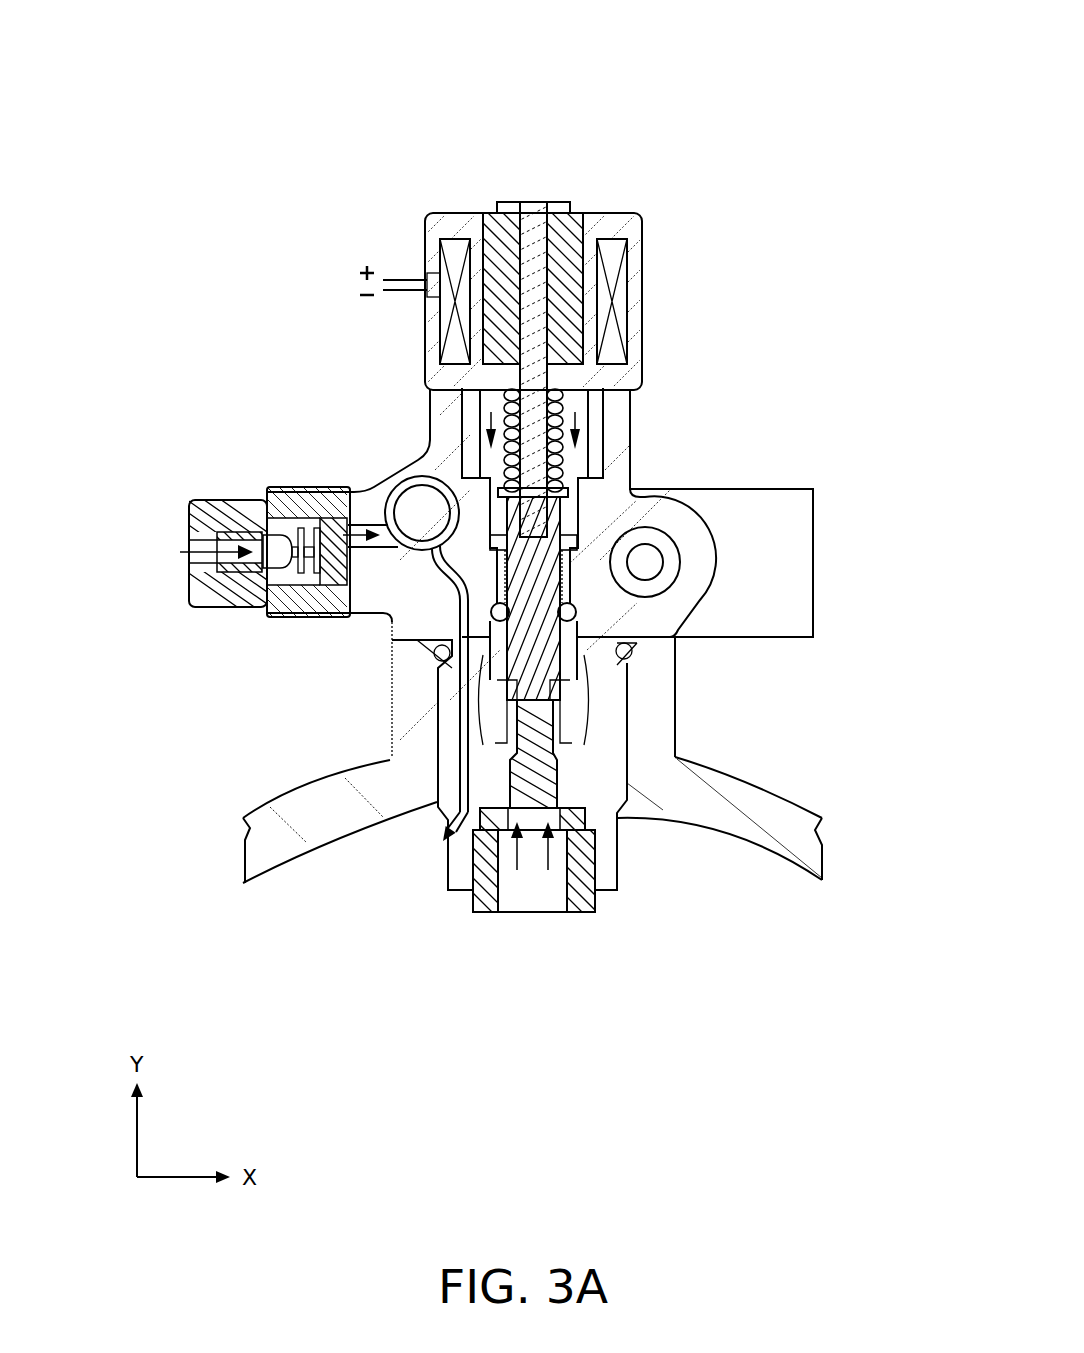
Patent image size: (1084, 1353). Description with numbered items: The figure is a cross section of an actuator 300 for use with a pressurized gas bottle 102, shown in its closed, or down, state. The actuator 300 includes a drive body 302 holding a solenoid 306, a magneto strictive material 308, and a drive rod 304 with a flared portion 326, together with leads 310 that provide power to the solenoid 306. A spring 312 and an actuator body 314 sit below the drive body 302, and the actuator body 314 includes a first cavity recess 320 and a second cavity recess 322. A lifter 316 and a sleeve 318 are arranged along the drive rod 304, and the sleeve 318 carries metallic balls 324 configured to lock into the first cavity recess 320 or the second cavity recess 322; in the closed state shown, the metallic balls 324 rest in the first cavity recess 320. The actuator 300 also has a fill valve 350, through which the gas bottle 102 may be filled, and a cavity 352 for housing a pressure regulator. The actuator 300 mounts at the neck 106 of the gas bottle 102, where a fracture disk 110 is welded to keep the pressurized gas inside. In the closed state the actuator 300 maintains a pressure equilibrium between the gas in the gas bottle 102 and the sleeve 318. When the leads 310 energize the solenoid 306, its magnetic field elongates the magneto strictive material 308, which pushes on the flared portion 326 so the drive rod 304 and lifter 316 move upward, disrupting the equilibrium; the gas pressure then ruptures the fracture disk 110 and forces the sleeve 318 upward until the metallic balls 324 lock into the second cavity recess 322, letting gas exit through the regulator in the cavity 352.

The actuator 300 is at (247, 102).
The drive body 302 is at (433, 230).
The drive rod 304 is at (538, 243).
The solenoid 306 is at (457, 310).
The magneto strictive material 308 is at (563, 332).
The leads 310 is at (318, 281).
The spring 312 is at (548, 455).
The actuator body 314 is at (405, 462).
The lifter 316 is at (515, 670).
The sleeve 318 is at (515, 752).
The first cavity recess 320 is at (492, 620).
The second cavity recess 322 is at (572, 560).
The metallic balls 324 is at (577, 612).
The flared portion 326 is at (547, 208).
The fill valve 350 is at (187, 506).
The cavity 352 is at (697, 547).
The gas bottle 102 is at (337, 802).
The neck 106 is at (663, 707).
The fracture disk 110 is at (618, 818).